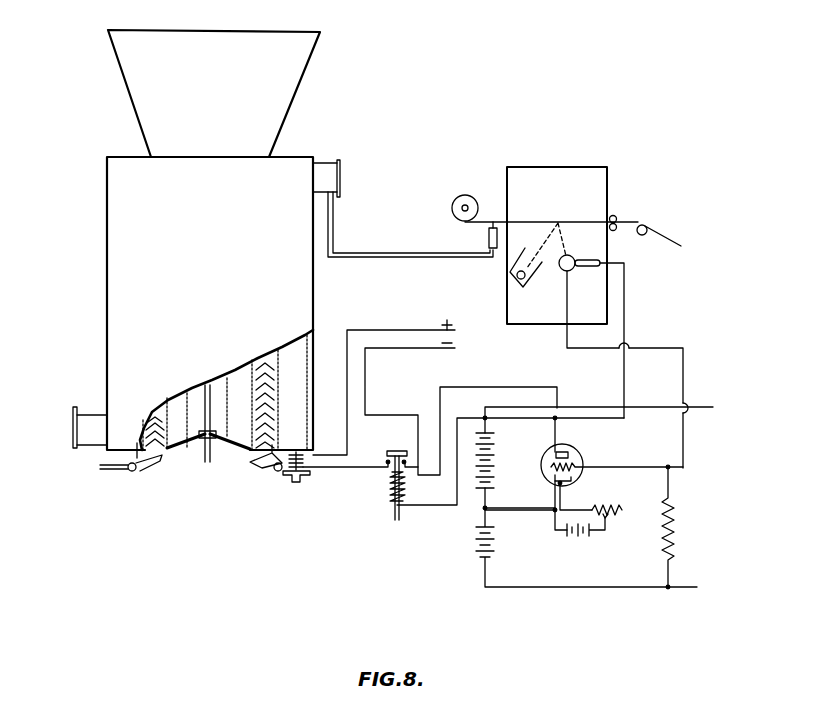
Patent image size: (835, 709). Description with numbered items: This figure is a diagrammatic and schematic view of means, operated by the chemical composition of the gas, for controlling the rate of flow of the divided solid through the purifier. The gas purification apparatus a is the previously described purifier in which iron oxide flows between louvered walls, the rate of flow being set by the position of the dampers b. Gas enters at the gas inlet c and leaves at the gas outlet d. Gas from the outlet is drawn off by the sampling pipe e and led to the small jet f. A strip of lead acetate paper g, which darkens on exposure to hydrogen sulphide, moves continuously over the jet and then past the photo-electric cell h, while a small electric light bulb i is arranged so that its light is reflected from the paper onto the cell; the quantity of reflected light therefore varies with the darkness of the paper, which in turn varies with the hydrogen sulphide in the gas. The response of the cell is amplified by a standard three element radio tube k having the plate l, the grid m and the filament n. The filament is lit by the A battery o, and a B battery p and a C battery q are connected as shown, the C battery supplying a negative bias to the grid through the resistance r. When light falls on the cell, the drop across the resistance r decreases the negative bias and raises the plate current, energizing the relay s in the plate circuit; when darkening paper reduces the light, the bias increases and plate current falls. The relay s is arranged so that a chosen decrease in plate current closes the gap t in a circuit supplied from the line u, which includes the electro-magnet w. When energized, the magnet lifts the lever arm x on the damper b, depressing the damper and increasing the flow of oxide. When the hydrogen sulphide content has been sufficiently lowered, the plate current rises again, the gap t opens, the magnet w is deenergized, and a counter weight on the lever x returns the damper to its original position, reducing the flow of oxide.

The gas purification apparatus a is at (107, 263).
The dampers b is at (150, 470).
The gas inlet c is at (73, 413).
The gas outlet d is at (341, 176).
The sampling pipe e is at (410, 224).
The small jet f is at (488, 238).
The strip of lead acetate paper g is at (667, 236).
The photo-electric cell h is at (573, 258).
The small electric light bulb i is at (515, 283).
The three element radio tube k is at (582, 457).
The plate l is at (569, 450).
The grid m is at (550, 466).
The filament n is at (576, 483).
The A battery o is at (581, 538).
The B battery p is at (495, 480).
The C battery q is at (476, 541).
The resistance r is at (676, 527).
The relay s is at (392, 490).
The gap t is at (386, 458).
The line u is at (347, 386).
The electro-magnet w is at (303, 467).
The lever arm x is at (296, 483).